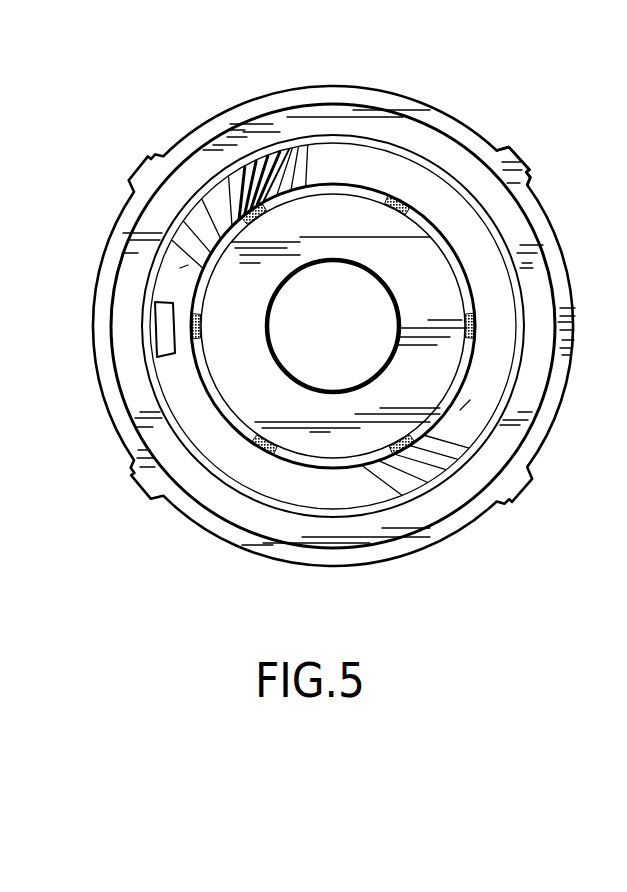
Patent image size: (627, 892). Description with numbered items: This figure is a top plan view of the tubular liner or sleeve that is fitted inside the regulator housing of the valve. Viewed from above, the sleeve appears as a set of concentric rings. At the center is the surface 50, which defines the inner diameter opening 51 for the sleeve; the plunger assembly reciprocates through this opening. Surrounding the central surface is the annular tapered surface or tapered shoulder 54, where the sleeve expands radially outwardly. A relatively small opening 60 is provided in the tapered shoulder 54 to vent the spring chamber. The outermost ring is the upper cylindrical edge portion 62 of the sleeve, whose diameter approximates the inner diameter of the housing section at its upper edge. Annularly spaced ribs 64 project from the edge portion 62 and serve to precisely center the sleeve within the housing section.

The surface 50 is at (248, 365).
The inner diameter opening 51 is at (313, 297).
The tapered shoulder 54 is at (370, 491).
The opening 60 is at (163, 313).
The upper cylindrical edge portion 62 is at (573, 358).
The ribs 64 is at (512, 158).